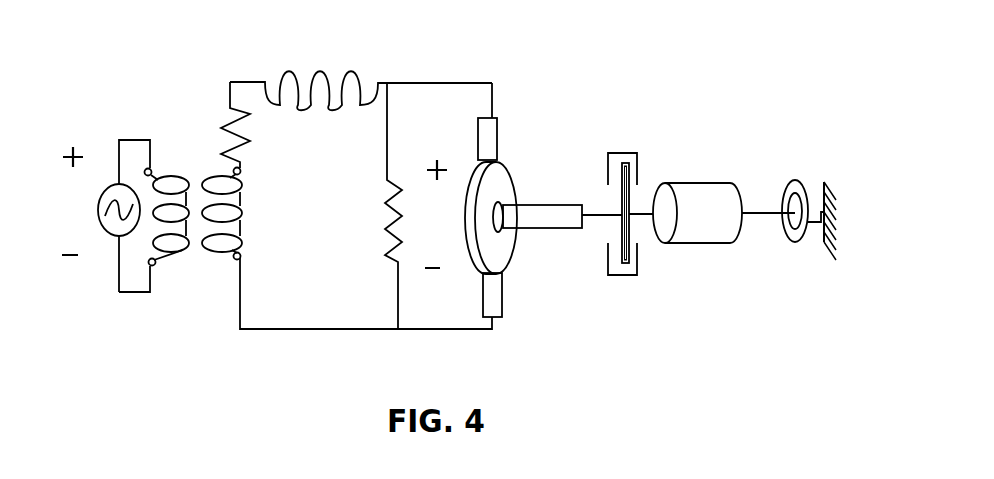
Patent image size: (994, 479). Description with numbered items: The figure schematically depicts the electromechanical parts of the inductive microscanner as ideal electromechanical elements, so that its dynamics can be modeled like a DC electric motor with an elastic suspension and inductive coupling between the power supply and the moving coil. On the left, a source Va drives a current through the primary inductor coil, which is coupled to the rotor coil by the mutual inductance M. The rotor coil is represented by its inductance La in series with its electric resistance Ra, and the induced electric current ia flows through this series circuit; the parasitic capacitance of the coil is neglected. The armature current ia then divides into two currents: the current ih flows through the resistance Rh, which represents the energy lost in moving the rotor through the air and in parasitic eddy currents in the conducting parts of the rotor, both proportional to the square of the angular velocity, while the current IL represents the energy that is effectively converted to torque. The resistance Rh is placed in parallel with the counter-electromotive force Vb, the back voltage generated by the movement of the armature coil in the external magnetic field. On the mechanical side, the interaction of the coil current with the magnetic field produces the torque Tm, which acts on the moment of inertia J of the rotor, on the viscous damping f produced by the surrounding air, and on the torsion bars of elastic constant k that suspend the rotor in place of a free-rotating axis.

The armature voltage source Va is at (106, 216).
The mutual inductance M is at (194, 247).
The electric resistance Ra is at (197, 125).
The inductance La is at (361, 67).
The current iL IL is at (463, 73).
The induced electric current ia is at (306, 120).
The current ih is at (373, 123).
The resistance Rh is at (367, 206).
The counter-electromotive force Vb is at (471, 217).
The torque Tm is at (553, 246).
The viscous damping f is at (608, 215).
The moment of inertia J is at (706, 238).
The elastic constant k is at (816, 222).